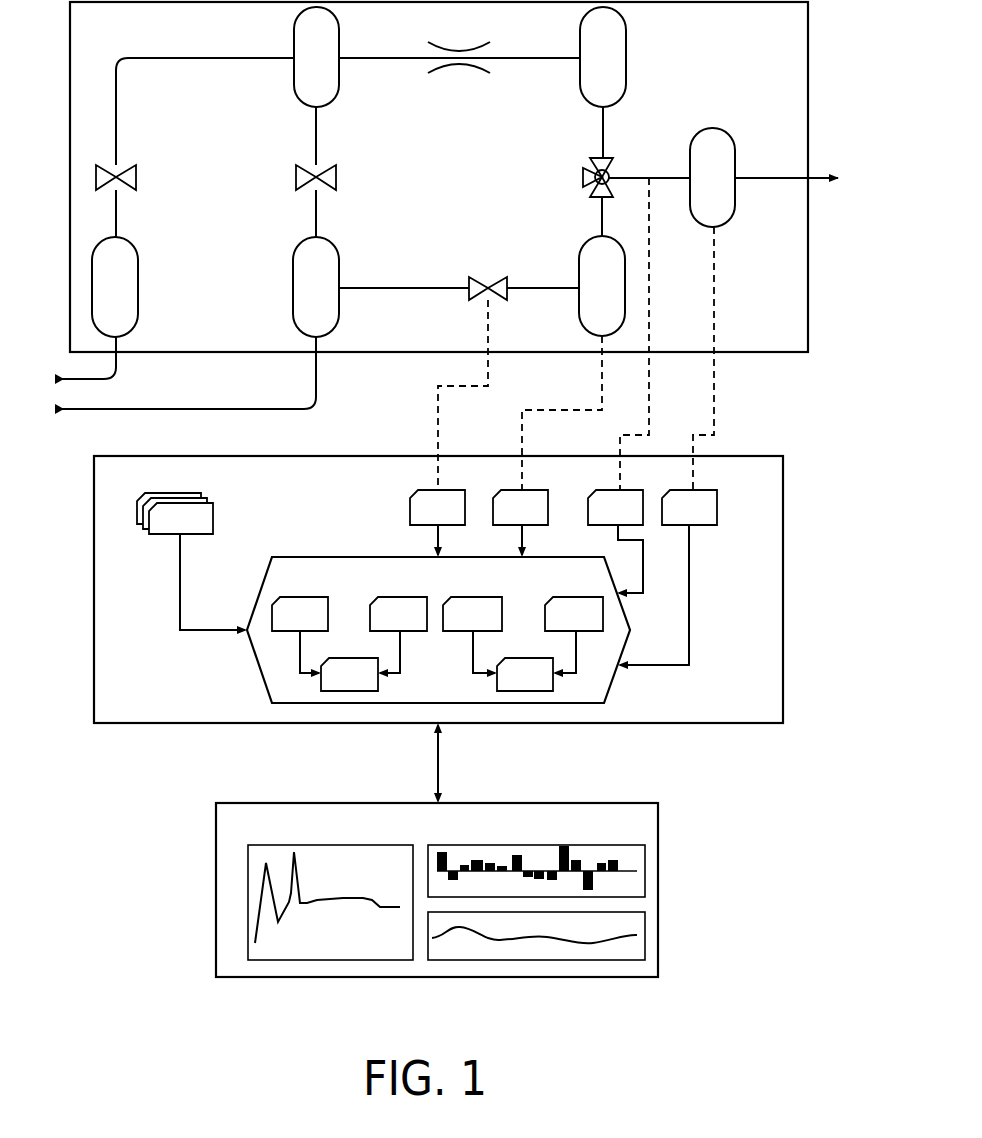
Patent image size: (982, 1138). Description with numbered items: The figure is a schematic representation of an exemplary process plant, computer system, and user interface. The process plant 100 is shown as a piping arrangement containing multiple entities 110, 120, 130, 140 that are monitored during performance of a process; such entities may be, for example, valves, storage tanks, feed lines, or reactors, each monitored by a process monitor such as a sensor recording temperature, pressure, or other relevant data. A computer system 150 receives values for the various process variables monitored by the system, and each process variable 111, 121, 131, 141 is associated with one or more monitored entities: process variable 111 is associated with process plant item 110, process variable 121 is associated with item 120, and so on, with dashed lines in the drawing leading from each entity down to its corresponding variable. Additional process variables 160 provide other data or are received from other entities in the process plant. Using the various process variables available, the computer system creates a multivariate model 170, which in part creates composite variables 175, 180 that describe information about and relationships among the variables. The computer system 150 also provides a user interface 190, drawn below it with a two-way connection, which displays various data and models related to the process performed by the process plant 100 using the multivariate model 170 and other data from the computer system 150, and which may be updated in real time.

The process plant 100 is at (88, 36).
The process plant item 110 is at (507, 327).
The process variable 111 is at (421, 517).
The process plant item 120 is at (585, 297).
The process variable 121 is at (504, 517).
The process plant entity 130 is at (566, 190).
The process variable 131 is at (599, 517).
The process plant entity 140 is at (695, 190).
The process variable 141 is at (673, 517).
The computer system 150 is at (145, 487).
The additional process variables 160 is at (165, 529).
The multivariate model 170 is at (280, 587).
The composite variable 175 is at (333, 684).
The composite variable 180 is at (509, 684).
The user interface 190 is at (229, 836).